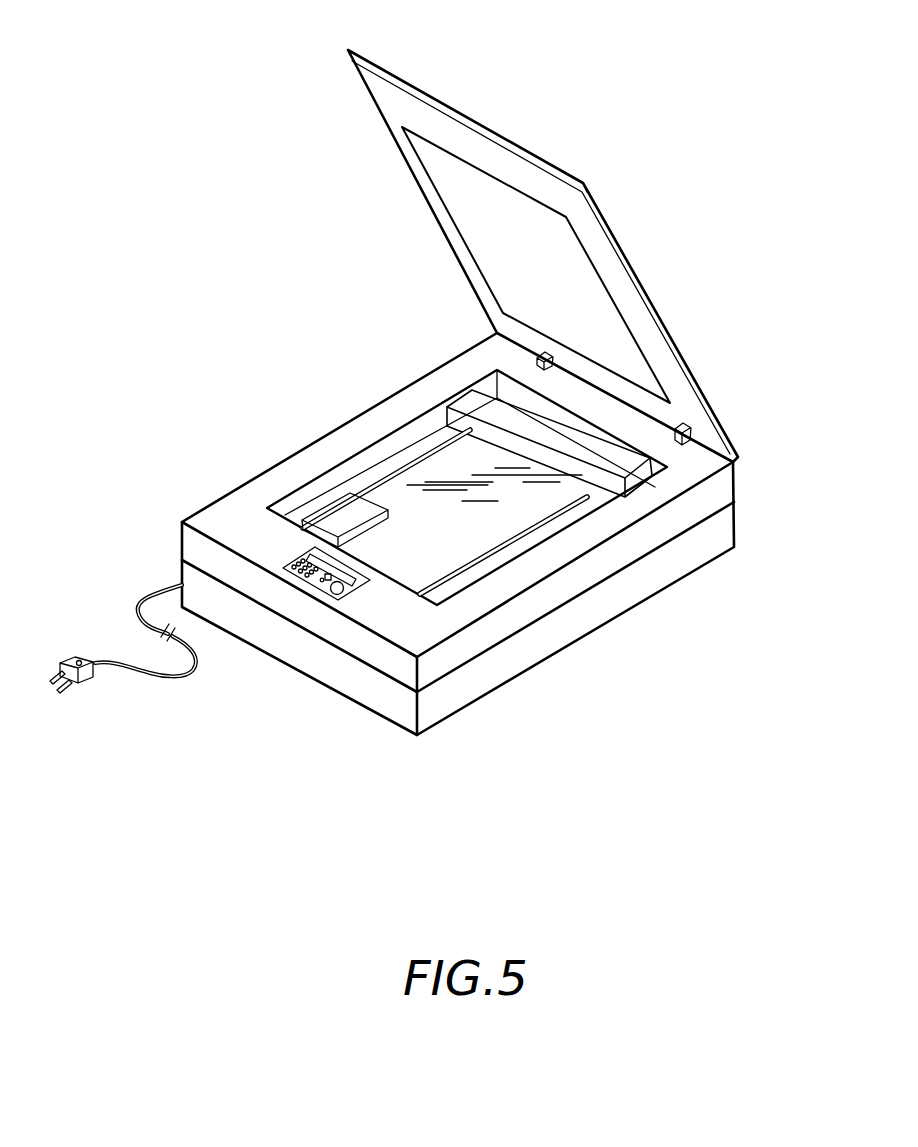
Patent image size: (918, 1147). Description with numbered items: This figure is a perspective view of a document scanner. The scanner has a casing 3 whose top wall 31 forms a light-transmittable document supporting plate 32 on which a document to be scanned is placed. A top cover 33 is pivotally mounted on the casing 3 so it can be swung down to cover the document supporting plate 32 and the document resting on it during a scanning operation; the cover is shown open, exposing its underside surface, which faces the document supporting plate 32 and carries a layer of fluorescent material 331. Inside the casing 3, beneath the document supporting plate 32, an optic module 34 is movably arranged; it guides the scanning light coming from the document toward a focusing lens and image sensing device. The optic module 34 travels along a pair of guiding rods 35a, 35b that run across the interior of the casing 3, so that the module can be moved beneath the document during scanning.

The casing 3 is at (412, 403).
The top wall 31 is at (677, 482).
The document supporting plate 32 is at (437, 547).
The top cover 33 is at (561, 256).
The layer of fluorescent material 331 is at (623, 342).
The optic module 34 is at (617, 485).
The guiding rod 35a is at (432, 452).
The guiding rod 35b is at (547, 522).